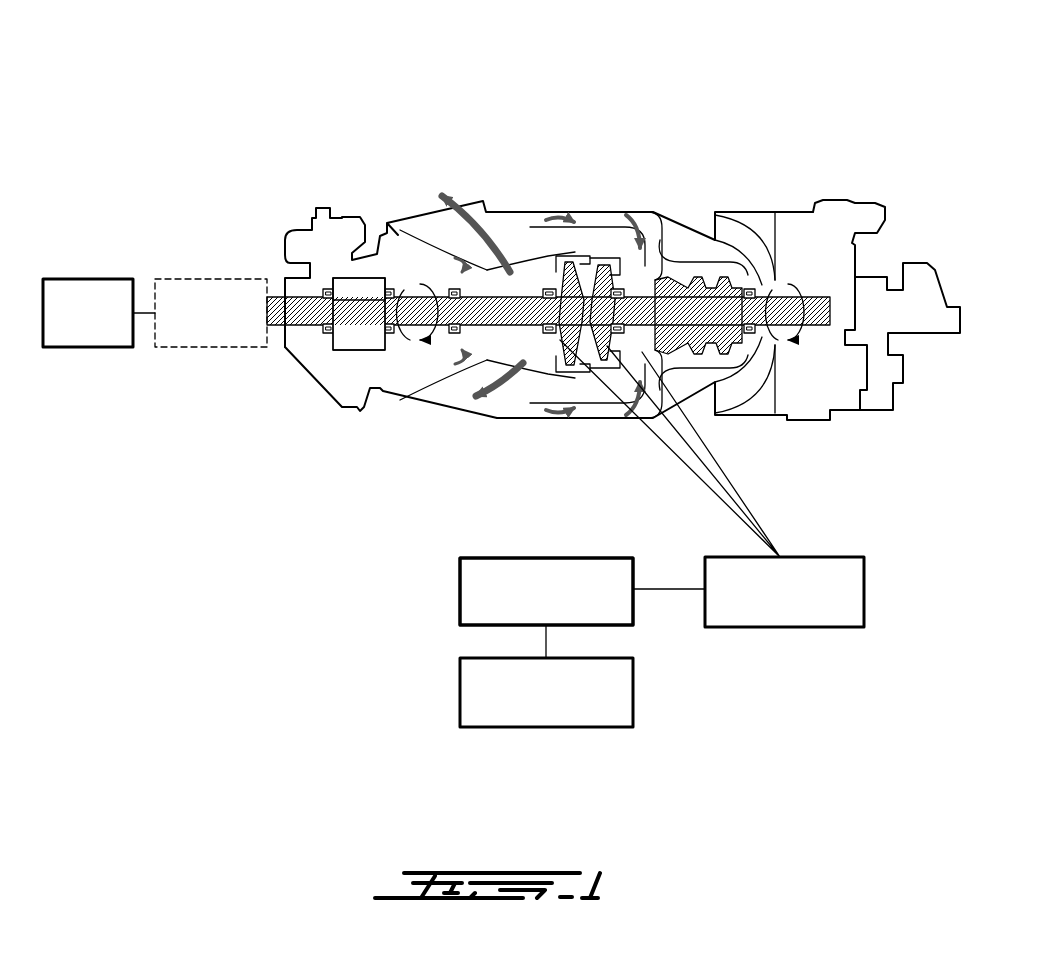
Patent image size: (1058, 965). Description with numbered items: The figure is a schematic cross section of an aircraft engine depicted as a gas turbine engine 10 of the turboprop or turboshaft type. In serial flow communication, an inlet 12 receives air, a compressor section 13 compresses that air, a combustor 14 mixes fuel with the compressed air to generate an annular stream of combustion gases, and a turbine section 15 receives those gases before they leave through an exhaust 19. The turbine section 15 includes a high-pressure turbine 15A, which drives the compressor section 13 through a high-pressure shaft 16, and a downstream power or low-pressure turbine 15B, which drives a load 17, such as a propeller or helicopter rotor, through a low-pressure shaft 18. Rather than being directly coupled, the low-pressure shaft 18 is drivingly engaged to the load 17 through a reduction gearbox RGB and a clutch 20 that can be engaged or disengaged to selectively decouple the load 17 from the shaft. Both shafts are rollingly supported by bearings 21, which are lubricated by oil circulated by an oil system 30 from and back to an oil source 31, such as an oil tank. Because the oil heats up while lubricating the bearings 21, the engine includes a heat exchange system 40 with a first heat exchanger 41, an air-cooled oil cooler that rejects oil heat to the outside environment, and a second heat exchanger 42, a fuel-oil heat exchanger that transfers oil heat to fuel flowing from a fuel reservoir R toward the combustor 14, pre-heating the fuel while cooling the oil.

The gas turbine engine 10 is at (570, 120).
The inlet 12 is at (765, 205).
The compressor section 13 is at (687, 278).
The combustor 14 is at (597, 402).
The turbine section 15 is at (562, 252).
The high-pressure turbine 15A is at (636, 395).
The low-pressure turbine 15B is at (474, 337).
The high-pressure shaft 16 is at (630, 263).
The load 17 is at (90, 279).
The low-pressure shaft 18 is at (437, 400).
The exhaust 19 is at (430, 223).
The clutch 20 is at (210, 279).
The bearings 21 is at (556, 280).
The oil system 30 is at (674, 664).
The oil source 31 is at (864, 591).
The heat exchange system 40 is at (426, 553).
The first heat exchanger 41 is at (460, 587).
The second heat exchanger 42 is at (546, 591).
The fuel reservoir R is at (545, 728).
The reduction gearbox RGB is at (359, 314).